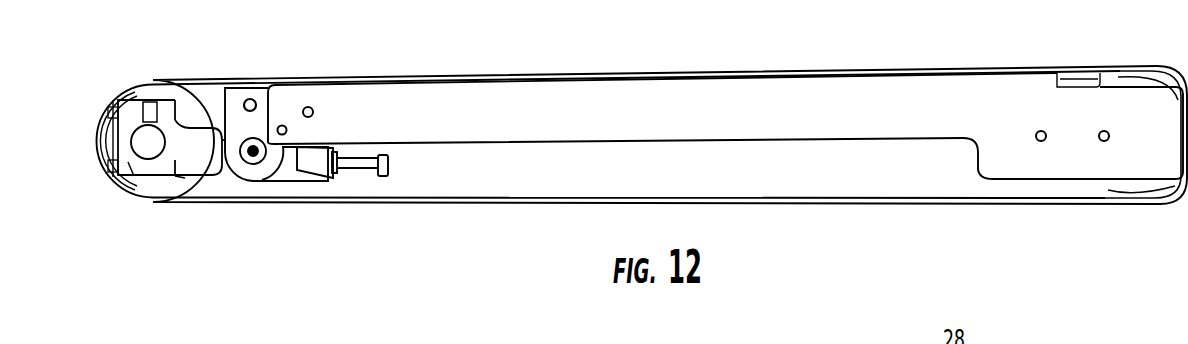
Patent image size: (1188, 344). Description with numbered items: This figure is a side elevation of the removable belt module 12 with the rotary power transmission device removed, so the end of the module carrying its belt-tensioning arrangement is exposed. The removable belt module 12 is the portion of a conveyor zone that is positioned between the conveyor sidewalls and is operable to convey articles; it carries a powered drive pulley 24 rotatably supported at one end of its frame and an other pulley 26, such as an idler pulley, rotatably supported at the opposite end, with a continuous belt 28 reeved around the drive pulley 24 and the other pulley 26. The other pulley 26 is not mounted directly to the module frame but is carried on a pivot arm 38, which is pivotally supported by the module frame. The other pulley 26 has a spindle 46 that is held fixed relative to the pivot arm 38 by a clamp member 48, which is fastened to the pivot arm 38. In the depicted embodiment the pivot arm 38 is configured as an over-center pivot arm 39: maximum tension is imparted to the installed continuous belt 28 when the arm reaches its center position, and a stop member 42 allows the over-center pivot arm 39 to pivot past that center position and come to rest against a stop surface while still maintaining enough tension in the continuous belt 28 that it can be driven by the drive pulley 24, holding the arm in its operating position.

The removable belt module 12 is at (451, 33).
The drive pulley 24 is at (1115, 187).
The other pulley 26 is at (180, 174).
The continuous belt 28 is at (690, 71).
The pivot arm 38 is at (203, 138).
The over-center pivot arm 39 is at (215, 145).
The stop member 42 is at (238, 168).
The spindle 46 is at (153, 140).
The clamp member 48 is at (128, 167).